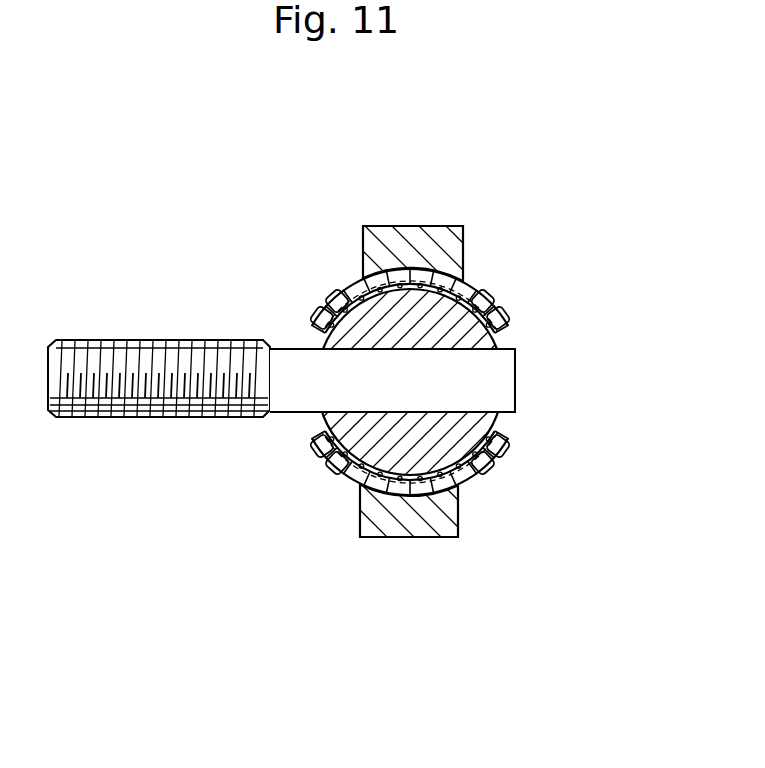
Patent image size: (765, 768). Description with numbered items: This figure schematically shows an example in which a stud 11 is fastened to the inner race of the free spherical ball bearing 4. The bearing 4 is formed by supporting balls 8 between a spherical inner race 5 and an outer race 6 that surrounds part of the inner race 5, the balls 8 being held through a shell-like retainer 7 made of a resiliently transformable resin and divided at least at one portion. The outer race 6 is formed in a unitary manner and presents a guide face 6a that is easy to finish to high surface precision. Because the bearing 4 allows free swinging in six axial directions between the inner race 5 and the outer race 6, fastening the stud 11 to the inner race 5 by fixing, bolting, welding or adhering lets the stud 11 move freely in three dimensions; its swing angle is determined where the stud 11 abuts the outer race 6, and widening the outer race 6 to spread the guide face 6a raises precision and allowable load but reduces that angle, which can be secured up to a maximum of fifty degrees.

The free spherical ball bearing 4 is at (413, 325).
The inner race 5 is at (505, 344).
The outer race 6 is at (363, 263).
The guide face 6a is at (444, 248).
The retainer 7 is at (316, 322).
The balls 8 is at (337, 288).
The stud 11 is at (148, 340).